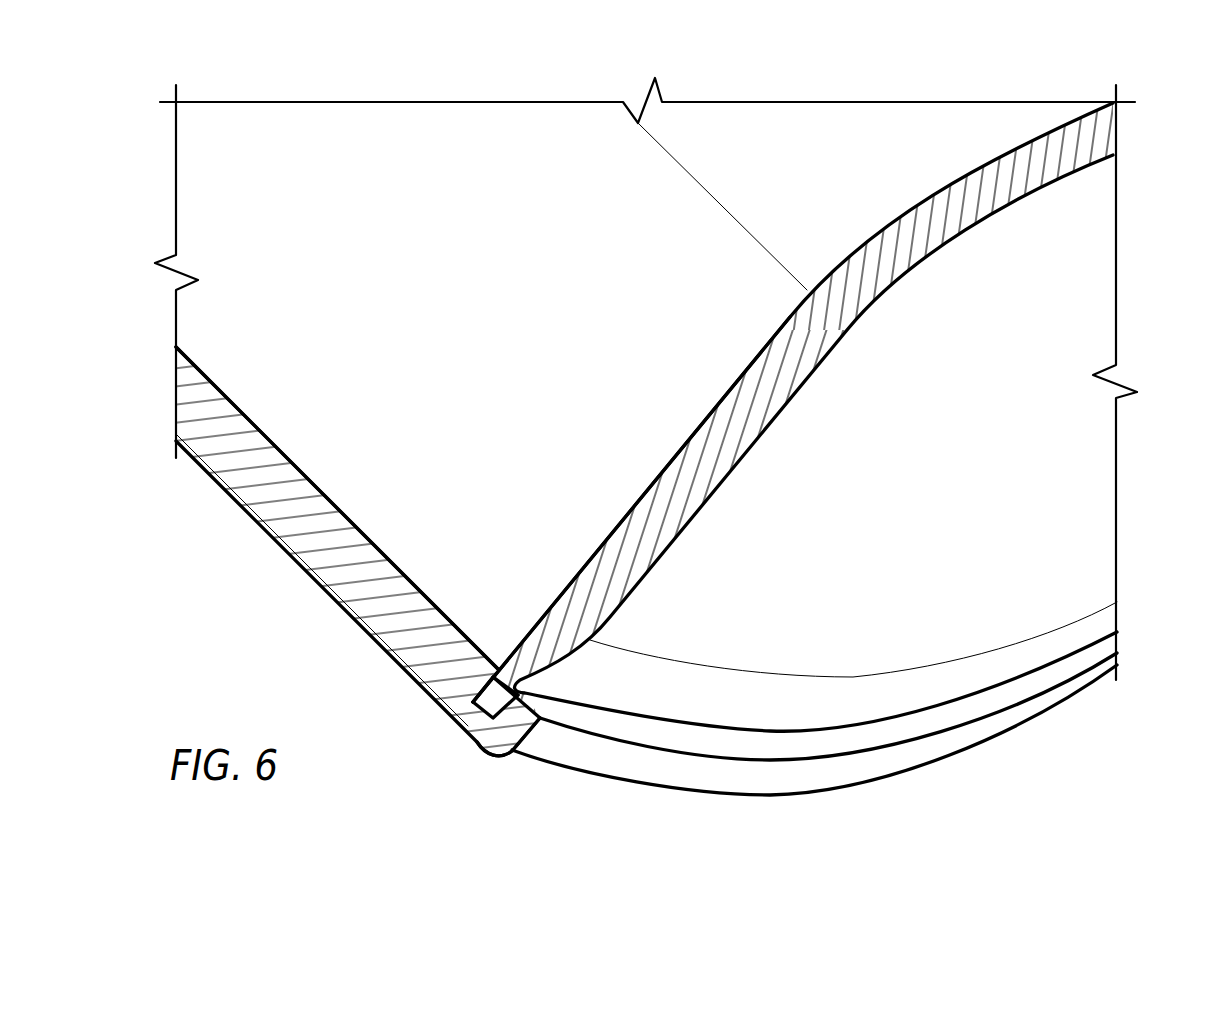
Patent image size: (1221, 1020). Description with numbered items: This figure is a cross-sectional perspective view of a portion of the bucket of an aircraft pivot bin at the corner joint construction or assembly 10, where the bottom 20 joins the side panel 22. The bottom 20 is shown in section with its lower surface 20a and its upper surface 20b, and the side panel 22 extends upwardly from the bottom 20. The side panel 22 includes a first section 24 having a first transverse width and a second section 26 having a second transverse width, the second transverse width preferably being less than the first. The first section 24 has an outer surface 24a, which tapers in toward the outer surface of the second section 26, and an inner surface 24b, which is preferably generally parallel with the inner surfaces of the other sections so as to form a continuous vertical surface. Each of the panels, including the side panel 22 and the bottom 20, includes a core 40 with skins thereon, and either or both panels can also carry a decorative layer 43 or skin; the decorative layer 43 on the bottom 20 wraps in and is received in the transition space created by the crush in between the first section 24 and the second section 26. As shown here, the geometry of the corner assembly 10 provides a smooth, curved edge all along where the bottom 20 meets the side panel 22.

The corner joint construction or assembly 10 is at (440, 762).
The bottom 20 is at (283, 537).
The lower surface 20a is at (207, 473).
The upper surface 20b is at (432, 380).
The side panel 22 is at (863, 137).
The first section 24 is at (613, 548).
The outer surface of the first section 24a is at (952, 473).
The inner surface of the first section 24b is at (690, 435).
The second section 26 is at (495, 712).
The core 40 is at (430, 690).
The decorative layer 43 is at (490, 757).